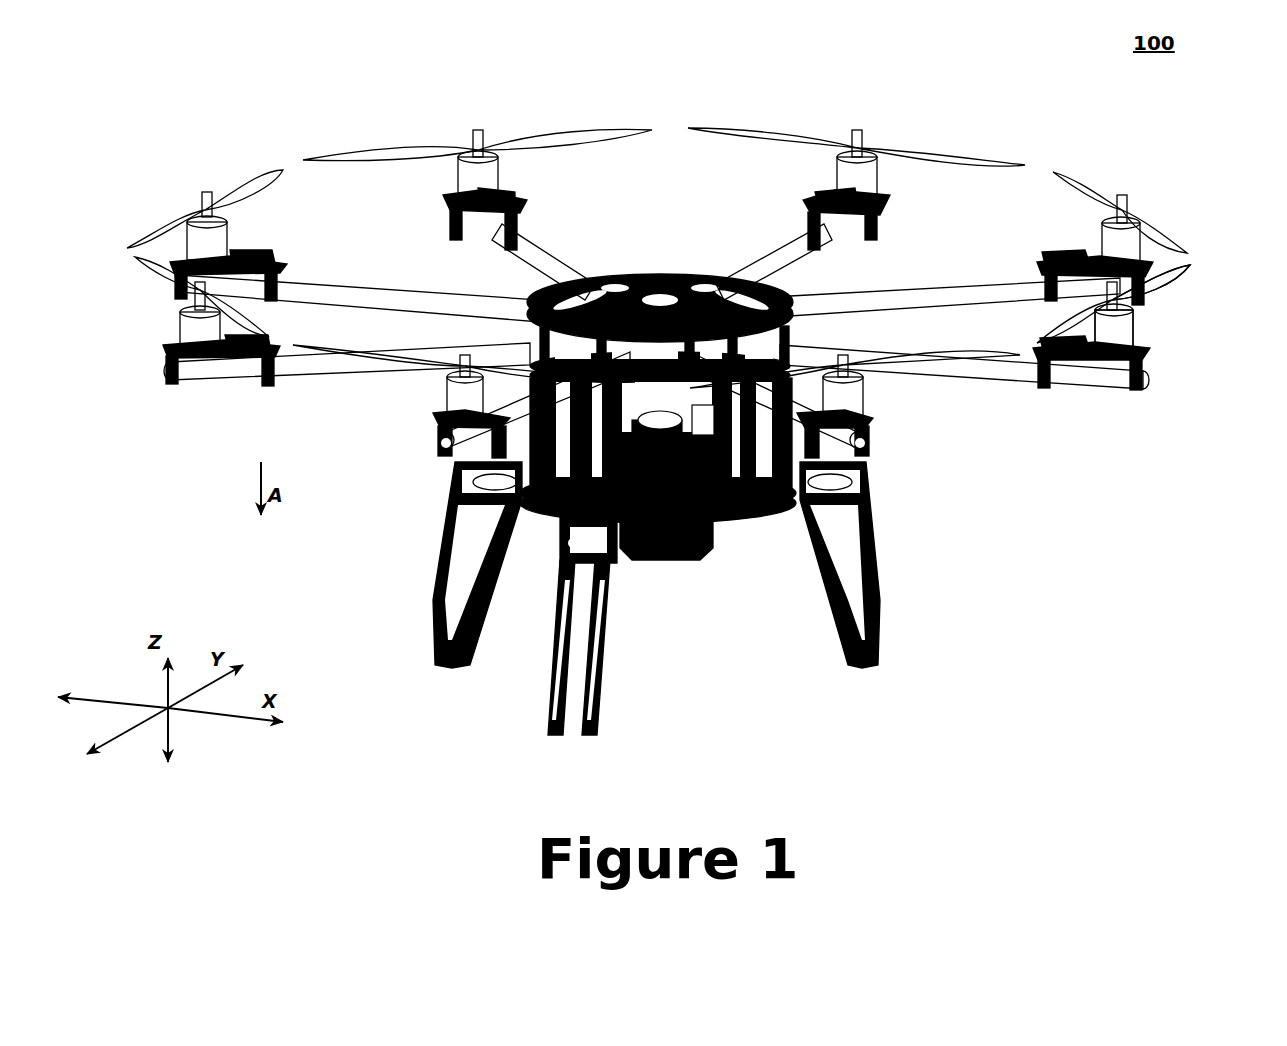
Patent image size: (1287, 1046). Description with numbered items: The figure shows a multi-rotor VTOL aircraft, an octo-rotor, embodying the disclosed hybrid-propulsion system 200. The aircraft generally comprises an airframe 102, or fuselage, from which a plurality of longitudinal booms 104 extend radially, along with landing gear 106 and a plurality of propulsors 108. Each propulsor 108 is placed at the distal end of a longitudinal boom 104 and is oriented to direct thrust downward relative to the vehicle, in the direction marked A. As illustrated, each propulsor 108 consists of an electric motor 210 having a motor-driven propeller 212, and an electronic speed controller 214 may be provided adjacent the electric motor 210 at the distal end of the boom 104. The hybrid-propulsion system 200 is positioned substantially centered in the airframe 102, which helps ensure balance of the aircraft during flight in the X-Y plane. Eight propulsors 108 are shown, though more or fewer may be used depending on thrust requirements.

The airframe 102 is at (660, 258).
The longitudinal boom 104 is at (352, 272).
The landing gear 106 is at (878, 575).
The propulsor 108 is at (482, 118).
The hybrid-propulsion system 200 is at (688, 445).
The electric motor 210 is at (1142, 338).
The propeller 212 is at (1182, 291).
The electronic speed controller 214 is at (262, 243).